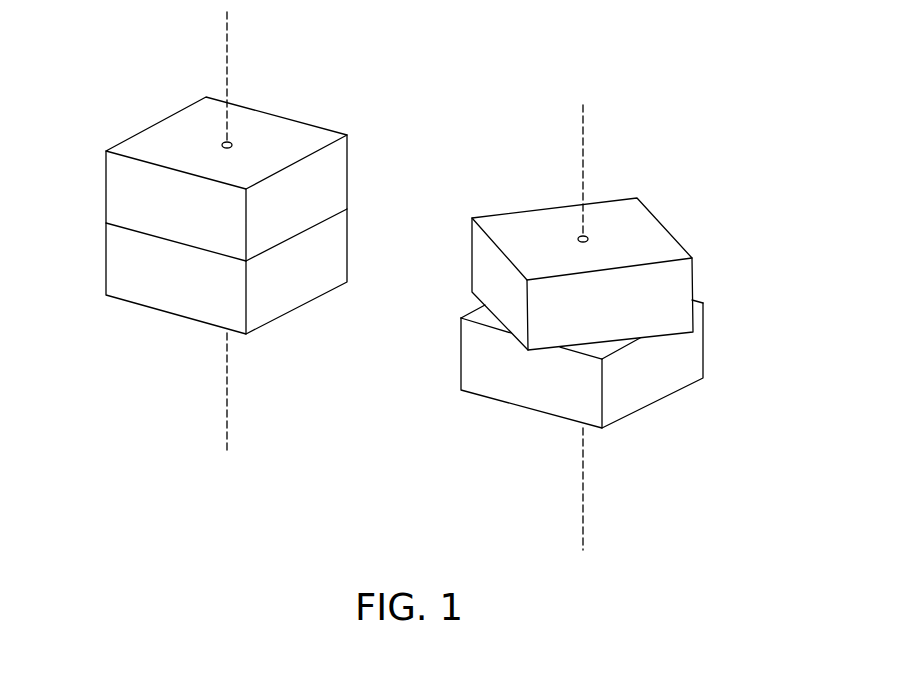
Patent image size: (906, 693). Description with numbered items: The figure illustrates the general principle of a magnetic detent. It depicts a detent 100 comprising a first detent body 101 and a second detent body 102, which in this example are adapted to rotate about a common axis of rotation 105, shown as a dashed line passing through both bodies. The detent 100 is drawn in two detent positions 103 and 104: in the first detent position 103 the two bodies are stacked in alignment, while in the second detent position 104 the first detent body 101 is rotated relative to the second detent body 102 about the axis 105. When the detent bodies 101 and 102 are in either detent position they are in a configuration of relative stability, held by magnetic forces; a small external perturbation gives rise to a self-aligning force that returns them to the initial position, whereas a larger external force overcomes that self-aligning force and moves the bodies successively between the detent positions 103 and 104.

The detent 100 is at (435, 280).
The first detent body 101 is at (350, 167).
The second detent body 102 is at (350, 252).
The detent position 103 is at (126, 76).
The detent position 104 is at (703, 218).
The common axis of rotation 105 is at (228, 45).